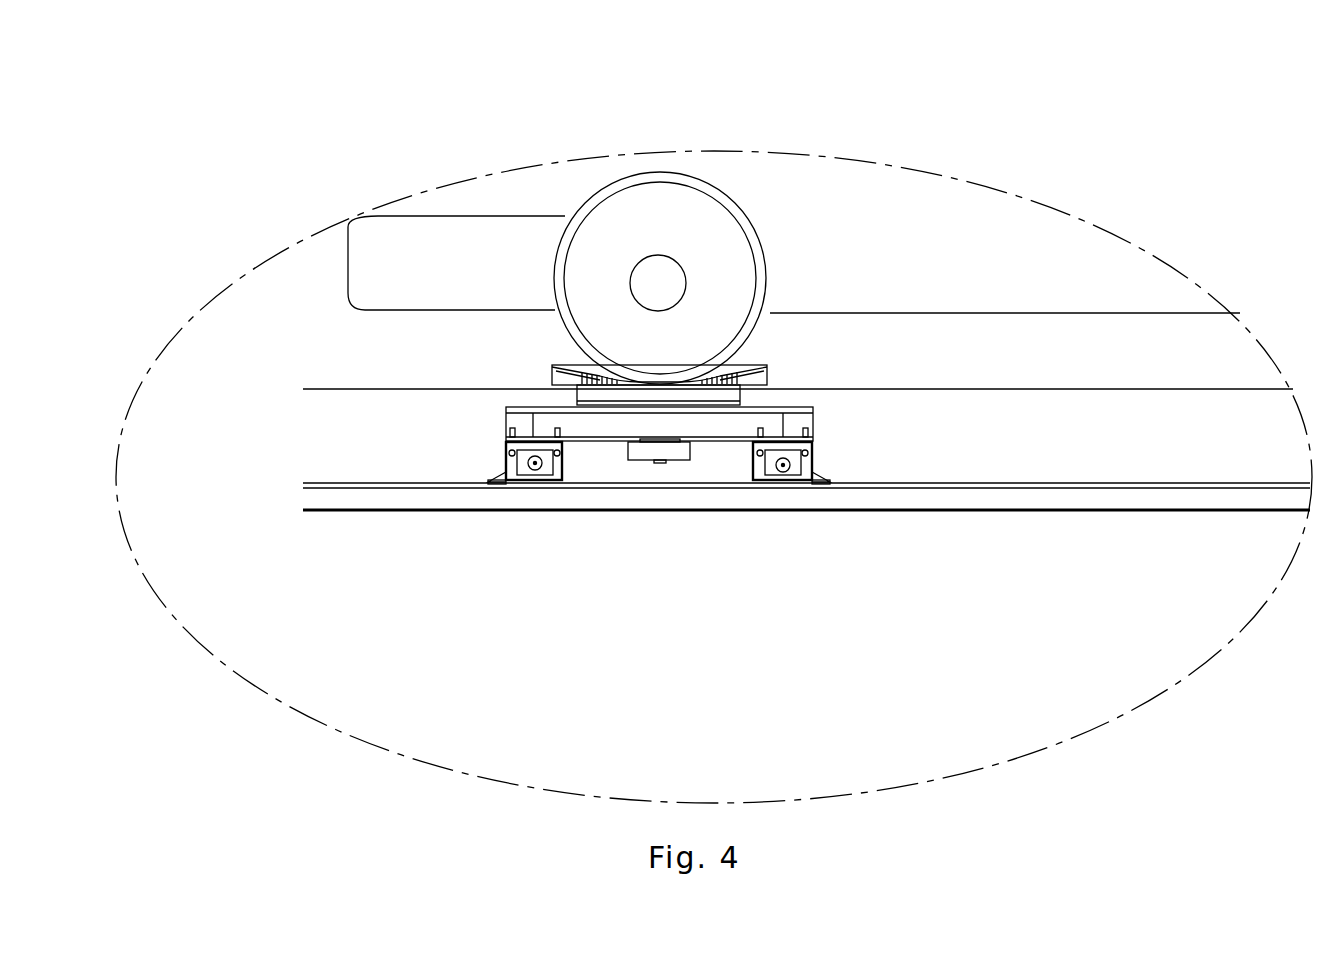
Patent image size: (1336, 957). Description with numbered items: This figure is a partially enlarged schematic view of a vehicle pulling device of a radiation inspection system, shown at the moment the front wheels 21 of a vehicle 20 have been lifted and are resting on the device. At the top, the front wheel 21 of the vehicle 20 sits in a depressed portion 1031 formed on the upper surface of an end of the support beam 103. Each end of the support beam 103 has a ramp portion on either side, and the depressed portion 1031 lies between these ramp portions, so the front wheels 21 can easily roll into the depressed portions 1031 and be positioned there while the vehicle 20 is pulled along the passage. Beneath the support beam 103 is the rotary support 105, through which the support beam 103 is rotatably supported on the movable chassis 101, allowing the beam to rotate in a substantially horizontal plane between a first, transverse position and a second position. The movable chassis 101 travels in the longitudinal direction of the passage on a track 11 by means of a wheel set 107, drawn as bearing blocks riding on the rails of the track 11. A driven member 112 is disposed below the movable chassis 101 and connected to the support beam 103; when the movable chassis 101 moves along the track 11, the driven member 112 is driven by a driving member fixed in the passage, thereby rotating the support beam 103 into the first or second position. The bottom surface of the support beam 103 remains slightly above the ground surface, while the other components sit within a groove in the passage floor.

The vehicle 20 is at (437, 265).
The front wheels 21 is at (693, 333).
The depressed portions 1031 is at (618, 373).
The support beam 103 is at (562, 370).
The rotary support 105 is at (630, 392).
The movable chassis 101 is at (702, 422).
The driven member 112 is at (635, 453).
The wheel set 107 is at (783, 465).
The track 11 is at (1112, 490).